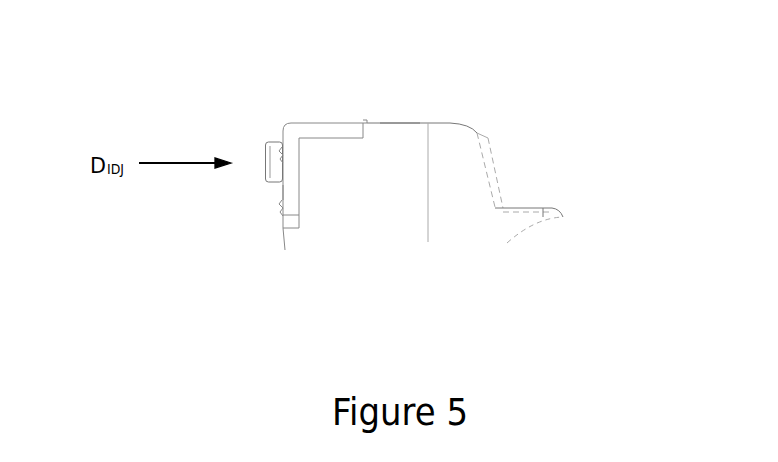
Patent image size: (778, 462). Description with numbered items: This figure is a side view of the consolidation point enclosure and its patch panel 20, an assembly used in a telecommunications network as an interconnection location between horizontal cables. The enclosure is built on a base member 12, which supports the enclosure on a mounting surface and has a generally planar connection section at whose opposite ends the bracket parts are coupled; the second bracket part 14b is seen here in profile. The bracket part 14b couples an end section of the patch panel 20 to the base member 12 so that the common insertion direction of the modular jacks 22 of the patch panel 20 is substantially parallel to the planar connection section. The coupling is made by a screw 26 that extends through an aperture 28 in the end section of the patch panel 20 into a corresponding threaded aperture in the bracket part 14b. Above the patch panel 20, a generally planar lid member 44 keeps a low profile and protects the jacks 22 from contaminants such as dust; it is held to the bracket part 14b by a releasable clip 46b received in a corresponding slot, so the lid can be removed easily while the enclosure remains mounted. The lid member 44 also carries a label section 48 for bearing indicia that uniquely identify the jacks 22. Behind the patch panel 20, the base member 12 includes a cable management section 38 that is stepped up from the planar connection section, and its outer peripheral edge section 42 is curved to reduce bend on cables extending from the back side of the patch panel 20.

The base member 12 is at (285, 240).
The second bracket part 14b is at (360, 210).
The patch panel 20 is at (283, 190).
The modular jack 22 is at (267, 145).
The screw 26 is at (280, 147).
The aperture 28 is at (511, 139).
The cable management section 38 is at (527, 208).
The outer peripheral edge section 42 is at (560, 213).
The lid member 44 is at (333, 130).
The releasable clip 46b is at (398, 125).
The label section 48 is at (368, 123).